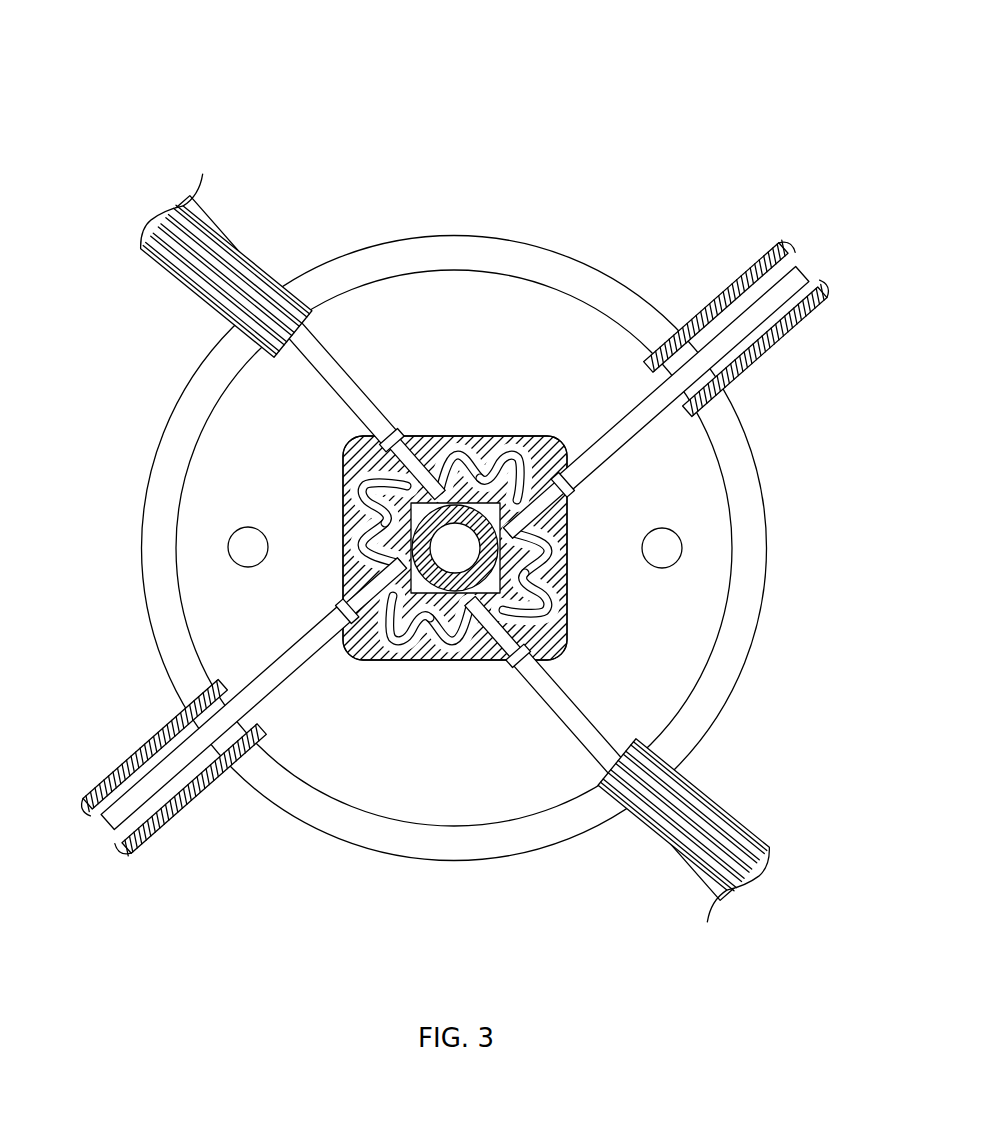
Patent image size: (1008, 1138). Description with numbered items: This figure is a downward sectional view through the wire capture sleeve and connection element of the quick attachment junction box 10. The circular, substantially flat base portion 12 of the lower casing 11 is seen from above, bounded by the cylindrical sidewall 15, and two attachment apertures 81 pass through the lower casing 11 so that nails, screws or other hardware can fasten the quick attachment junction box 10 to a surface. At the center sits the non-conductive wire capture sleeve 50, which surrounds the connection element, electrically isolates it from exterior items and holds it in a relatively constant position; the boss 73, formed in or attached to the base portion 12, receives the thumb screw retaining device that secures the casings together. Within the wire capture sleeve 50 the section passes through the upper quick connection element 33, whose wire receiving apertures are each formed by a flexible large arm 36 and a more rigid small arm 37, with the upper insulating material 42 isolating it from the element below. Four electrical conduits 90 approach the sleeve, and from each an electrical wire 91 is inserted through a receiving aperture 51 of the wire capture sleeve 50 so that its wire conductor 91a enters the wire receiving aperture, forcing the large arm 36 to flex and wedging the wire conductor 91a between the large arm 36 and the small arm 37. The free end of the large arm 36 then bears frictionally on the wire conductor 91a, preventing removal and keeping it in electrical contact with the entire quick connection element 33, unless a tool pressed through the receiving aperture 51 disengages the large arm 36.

The quick attachment junction box 10 is at (291, 78).
The lower casing 11 is at (118, 499).
The base portion 12 is at (220, 435).
The sidewall 15 is at (508, 838).
The upper quick connection element 33 is at (443, 623).
The large arm 36 is at (505, 453).
The small arm 37 is at (432, 467).
The upper insulating material 42 is at (508, 553).
The wire capture sleeve 50 is at (456, 563).
The receiving aperture 51 is at (346, 434).
The boss 73 is at (507, 570).
The attachment aperture 81 is at (243, 570).
The electrical conduit 90 is at (277, 232).
The electrical wire 91 is at (345, 365).
The wire conductor 91a is at (440, 465).